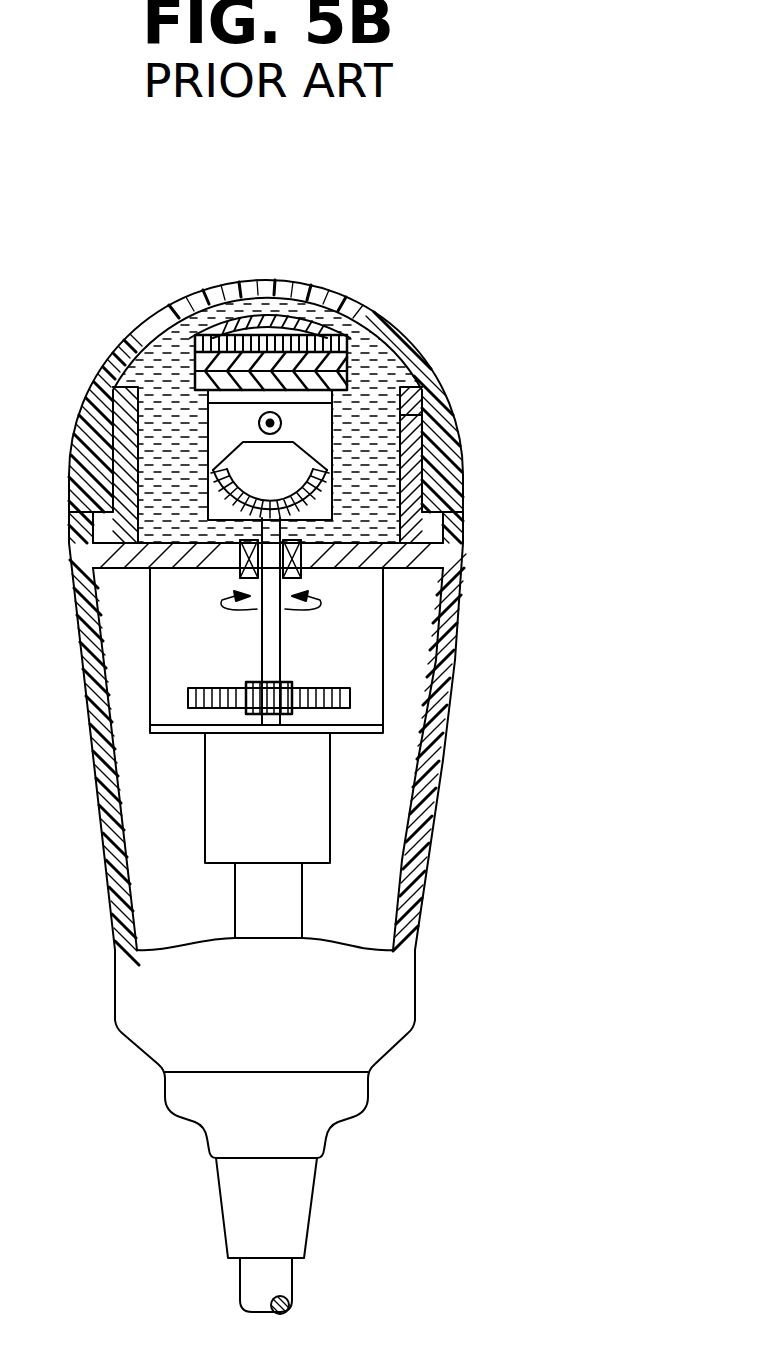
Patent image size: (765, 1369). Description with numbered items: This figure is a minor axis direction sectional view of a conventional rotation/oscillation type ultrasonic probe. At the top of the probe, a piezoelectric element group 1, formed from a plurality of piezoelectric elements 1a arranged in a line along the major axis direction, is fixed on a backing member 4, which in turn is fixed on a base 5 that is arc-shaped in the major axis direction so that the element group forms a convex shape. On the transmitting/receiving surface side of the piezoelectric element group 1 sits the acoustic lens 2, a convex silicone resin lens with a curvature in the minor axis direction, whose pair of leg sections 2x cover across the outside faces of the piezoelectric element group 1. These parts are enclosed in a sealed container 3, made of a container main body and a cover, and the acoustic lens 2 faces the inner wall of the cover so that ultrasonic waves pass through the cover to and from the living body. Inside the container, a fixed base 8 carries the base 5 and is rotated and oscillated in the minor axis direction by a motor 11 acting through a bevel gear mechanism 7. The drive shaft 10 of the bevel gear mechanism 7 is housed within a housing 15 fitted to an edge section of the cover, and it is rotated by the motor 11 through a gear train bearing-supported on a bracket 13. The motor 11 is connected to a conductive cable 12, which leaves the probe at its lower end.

The piezoelectric element group 1 is at (253, 283).
The piezoelectric element 1a is at (247, 335).
The acoustic lens 2 is at (298, 318).
The leg section 2x is at (150, 360).
The sealed container 3 is at (427, 353).
The backing member 4 is at (347, 340).
The base 5 is at (421, 387).
The bevel gear mechanism 7 is at (310, 500).
The fixed base 8 is at (233, 418).
The drive shaft 10 is at (278, 647).
The motor 11 is at (282, 420).
The conductive cable 12 is at (277, 1280).
The bracket 13 is at (375, 722).
The housing 15 is at (460, 645).